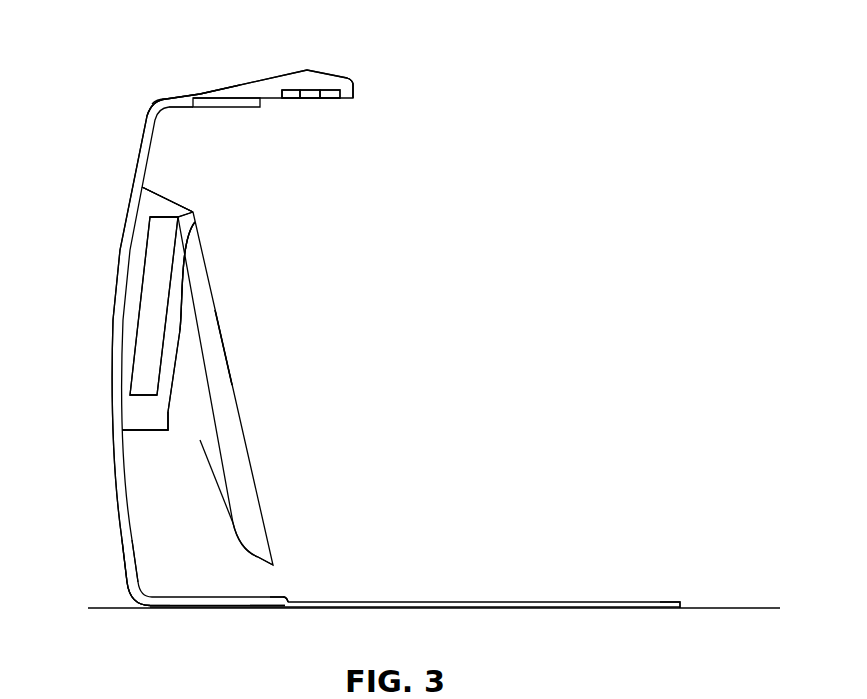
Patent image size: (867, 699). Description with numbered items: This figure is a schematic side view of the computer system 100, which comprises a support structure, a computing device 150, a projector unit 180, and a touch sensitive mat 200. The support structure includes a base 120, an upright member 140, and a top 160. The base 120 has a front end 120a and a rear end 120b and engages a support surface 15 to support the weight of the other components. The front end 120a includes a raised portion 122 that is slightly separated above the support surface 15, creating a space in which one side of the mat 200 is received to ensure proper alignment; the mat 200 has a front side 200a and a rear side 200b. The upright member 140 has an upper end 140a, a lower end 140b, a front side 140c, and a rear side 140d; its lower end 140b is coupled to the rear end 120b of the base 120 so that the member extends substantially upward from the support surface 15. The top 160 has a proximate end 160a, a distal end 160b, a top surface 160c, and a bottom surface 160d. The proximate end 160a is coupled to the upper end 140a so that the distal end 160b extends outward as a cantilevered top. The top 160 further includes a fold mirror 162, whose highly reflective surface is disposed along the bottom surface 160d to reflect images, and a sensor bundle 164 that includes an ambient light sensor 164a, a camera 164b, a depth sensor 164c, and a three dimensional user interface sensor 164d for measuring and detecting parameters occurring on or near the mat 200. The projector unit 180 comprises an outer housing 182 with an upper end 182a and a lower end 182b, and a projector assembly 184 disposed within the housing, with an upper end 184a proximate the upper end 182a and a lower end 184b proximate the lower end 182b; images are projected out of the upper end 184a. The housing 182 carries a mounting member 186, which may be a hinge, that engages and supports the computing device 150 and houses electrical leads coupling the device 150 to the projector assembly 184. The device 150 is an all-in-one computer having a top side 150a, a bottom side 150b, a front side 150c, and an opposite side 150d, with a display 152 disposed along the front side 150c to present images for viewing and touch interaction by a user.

The computer system 100 is at (540, 169).
The support surface 15 is at (720, 607).
The base 120 is at (233, 596).
The front end 120a is at (300, 592).
The rear end 120b is at (140, 618).
The raised portion 122 is at (292, 590).
The upright member 140 is at (102, 405).
The upper end 140a is at (135, 105).
The lower end 140b is at (122, 594).
The front side 140c is at (135, 508).
The rear side 140d is at (118, 507).
The computing device 150 is at (237, 299).
The top side 150a is at (198, 217).
The bottom side 150b is at (276, 560).
The front side 150c is at (227, 367).
The arm second surface 150d is at (222, 483).
The display 152 is at (223, 347).
The top 160 is at (221, 45).
The proximate end 160a is at (151, 90).
The distal end 160b is at (368, 81).
The top surface 160c is at (198, 83).
The bottom surface 160d is at (184, 120).
The fold mirror 162 is at (226, 108).
The sensor bundle 164 is at (340, 102).
The ambient light sensor 164a is at (331, 89).
The camera 164b is at (317, 89).
The depth sensor 164c is at (303, 89).
The user interface sensor 164d is at (287, 89).
The projector unit 180 is at (110, 336).
The outer housing 182 is at (158, 308).
The upper end 182a is at (142, 180).
The lower end 182b is at (153, 443).
The projector assembly 184 is at (140, 293).
The upper end 184a is at (141, 204).
The lower end 184b is at (164, 418).
The mounting member 186 is at (195, 245).
The touch sensitive mat 200 is at (643, 601).
The front side 200a is at (688, 617).
The rear side 200b is at (256, 614).